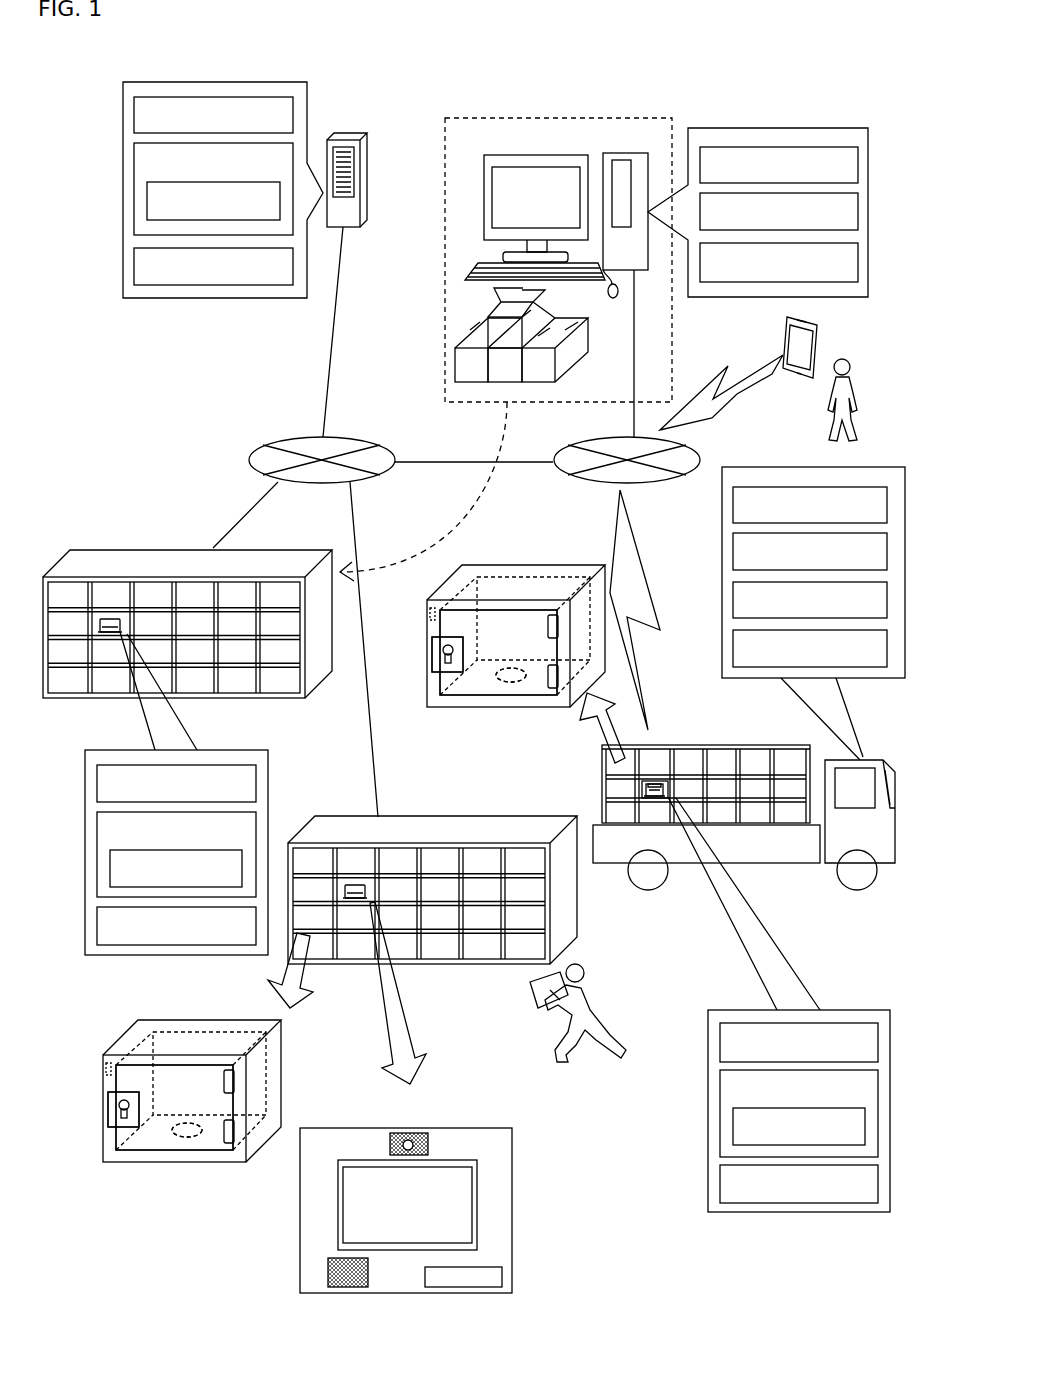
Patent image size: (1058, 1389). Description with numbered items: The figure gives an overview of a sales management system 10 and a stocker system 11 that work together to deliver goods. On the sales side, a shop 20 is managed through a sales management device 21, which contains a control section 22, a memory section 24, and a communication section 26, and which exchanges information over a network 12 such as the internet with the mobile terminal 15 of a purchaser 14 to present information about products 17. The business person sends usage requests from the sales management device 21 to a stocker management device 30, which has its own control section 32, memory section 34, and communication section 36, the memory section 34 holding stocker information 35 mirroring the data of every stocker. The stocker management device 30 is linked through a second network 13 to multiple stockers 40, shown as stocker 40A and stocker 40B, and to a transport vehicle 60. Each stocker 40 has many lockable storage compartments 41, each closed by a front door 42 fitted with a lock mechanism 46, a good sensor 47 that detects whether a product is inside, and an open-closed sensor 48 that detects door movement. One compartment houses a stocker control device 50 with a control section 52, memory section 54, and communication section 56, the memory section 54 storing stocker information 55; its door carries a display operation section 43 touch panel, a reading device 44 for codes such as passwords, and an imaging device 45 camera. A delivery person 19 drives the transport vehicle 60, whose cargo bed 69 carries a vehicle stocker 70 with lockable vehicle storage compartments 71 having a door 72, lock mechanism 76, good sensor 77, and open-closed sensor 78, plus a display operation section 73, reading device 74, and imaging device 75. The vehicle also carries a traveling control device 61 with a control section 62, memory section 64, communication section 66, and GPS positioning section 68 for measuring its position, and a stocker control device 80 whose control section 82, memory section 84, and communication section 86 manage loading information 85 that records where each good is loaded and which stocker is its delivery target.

The sales management system 10 is at (719, 88).
The stocker system 11 is at (377, 75).
The network 12 is at (578, 446).
The network 13 is at (262, 448).
The purchaser 14 is at (855, 430).
The mobile terminal 15 is at (818, 330).
The product 17 is at (560, 361).
The delivery person 19 is at (588, 992).
The shop 20 is at (618, 118).
The sales management device 21 is at (626, 160).
The control section 22 is at (860, 166).
The memory section 24 is at (860, 209).
The communication section 26 is at (860, 262).
The stocker management device 30 is at (345, 136).
The control section 32 is at (134, 112).
The memory section 34 is at (134, 160).
The stocker information 35 is at (147, 200).
The communication section 36 is at (134, 264).
The stocker 40 is at (140, 470).
The stocker 40A is at (276, 548).
The stocker 40B is at (452, 818).
The storage compartment 41 is at (70, 590).
The door 42 is at (206, 1063).
The display operation section 43 is at (468, 1160).
The reading device 44 is at (328, 1272).
The imaging device 45 is at (418, 1133).
The lock mechanism 46 is at (108, 1106).
The good sensor 47 is at (165, 1128).
The open-closed sensor 48 is at (105, 1066).
The stocker control device 50 is at (100, 750).
The control section 52 is at (97, 785).
The memory section 54 is at (97, 827).
The stocker information 55 is at (110, 868).
The communication section 56 is at (97, 925).
The transport vehicle 60 is at (830, 902).
The traveling control device 61 is at (780, 467).
The control section 62 is at (733, 504).
The memory section 64 is at (733, 551).
The communication section 66 is at (733, 597).
The GPS positioning section 68 is at (733, 647).
The cargo bed 69 is at (773, 852).
The vehicle stocker 70 is at (736, 721).
The vehicle storage compartment 71 is at (470, 565).
The door 72 is at (530, 612).
The display operation section 73 is at (660, 790).
The reading device 74 is at (632, 793).
The imaging device 75 is at (652, 780).
The lock mechanism 76 is at (432, 652).
The good sensor 77 is at (490, 676).
The open-closed sensor 78 is at (430, 611).
The stocker control device 80 is at (725, 1010).
The control section 82 is at (720, 1044).
The memory section 84 is at (720, 1089).
The loading information 85 is at (733, 1121).
The communication section 86 is at (720, 1183).